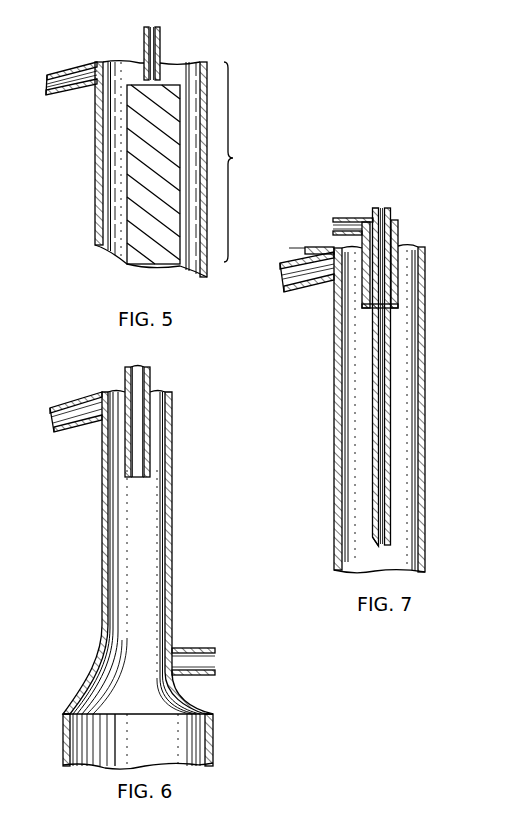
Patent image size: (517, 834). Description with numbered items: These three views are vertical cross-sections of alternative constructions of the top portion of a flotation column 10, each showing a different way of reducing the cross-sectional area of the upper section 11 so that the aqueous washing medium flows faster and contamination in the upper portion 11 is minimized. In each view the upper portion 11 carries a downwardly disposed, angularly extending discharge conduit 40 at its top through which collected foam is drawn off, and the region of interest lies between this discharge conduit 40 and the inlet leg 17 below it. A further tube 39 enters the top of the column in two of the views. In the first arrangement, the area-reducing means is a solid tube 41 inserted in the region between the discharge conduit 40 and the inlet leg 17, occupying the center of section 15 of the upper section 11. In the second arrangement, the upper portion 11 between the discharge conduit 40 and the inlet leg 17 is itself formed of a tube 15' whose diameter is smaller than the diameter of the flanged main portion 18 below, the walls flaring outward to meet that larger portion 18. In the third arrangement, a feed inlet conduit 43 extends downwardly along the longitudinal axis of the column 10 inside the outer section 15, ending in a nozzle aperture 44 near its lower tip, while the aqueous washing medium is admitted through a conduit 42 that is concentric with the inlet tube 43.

In FIG. 5, the column 10 is at (97, 213).
In FIG. 6, the column 10 is at (102, 518).
In FIG. 7, the column 10 is at (334, 331).
In FIG. 5, the upper section 11 is at (240, 162).
In FIG. 7, the section 15 is at (433, 409).
In FIG. 6, the tube of reduced diameter 15' is at (185, 579).
In FIG. 6, the inlet leg 17 is at (215, 658).
In FIG. 6, the flanged main portion 18 is at (208, 718).
In FIG. 5, the inlet tube 39 is at (161, 60).
In FIG. 6, the inlet tube 39 is at (150, 392).
In FIG. 5, the discharge conduit 40 is at (75, 74).
In FIG. 6, the discharge conduit 40 is at (90, 403).
In FIG. 7, the discharge conduit 40 is at (291, 263).
In FIG. 5, the solid tube 41 is at (177, 210).
In FIG. 7, the conduit 42 is at (399, 225).
In FIG. 7, the feed inlet conduit 43 is at (381, 211).
In FIG. 7, the nozzle aperture 44 is at (373, 539).